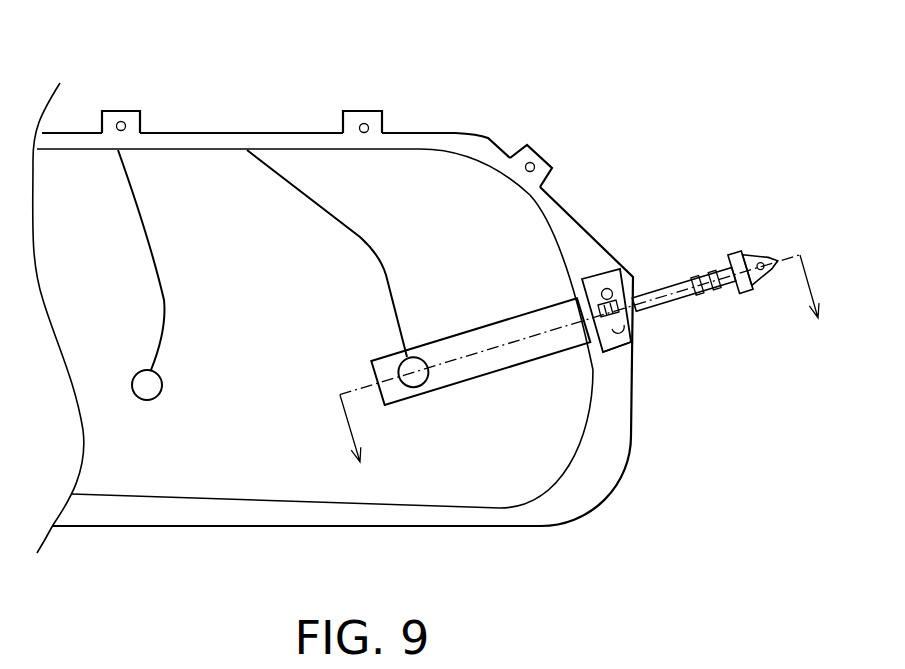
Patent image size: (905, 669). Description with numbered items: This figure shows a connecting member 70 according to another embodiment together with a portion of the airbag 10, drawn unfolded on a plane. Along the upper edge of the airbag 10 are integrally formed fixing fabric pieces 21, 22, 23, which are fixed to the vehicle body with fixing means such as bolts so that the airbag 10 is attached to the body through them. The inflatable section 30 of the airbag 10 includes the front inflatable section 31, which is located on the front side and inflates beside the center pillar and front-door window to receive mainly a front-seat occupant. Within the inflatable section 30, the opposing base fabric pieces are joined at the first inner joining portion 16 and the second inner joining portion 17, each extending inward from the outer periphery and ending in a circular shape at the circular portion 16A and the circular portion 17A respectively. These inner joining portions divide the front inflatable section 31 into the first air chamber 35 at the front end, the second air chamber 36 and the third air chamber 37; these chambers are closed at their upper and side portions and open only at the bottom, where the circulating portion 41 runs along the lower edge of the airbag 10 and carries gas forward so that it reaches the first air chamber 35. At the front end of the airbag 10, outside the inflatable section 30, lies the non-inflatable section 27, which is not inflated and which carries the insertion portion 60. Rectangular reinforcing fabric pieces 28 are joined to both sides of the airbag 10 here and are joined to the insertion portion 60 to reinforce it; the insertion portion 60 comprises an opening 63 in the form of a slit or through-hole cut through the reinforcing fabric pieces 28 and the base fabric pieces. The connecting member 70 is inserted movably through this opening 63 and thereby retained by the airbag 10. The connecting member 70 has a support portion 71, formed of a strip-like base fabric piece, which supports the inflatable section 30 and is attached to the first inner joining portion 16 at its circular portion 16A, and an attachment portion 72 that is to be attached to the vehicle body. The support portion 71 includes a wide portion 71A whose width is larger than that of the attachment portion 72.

The airbag 10 is at (274, 108).
The first inner joining portion 16 is at (338, 230).
The circular portion 16A is at (400, 362).
The second inner joining portion 17 is at (138, 222).
The circular portion 17A is at (137, 373).
The fixing fabric piece 21 is at (537, 160).
The fixing fabric piece 22 is at (364, 118).
The fixing fabric piece 23 is at (121, 118).
The non-inflatable section 27 is at (634, 397).
The reinforcing fabric piece 28 is at (636, 312).
The inflatable section 30 is at (621, 453).
The front inflatable section 31 is at (185, 452).
The first air chamber 35 is at (423, 183).
The second air chamber 36 is at (213, 185).
The third air chamber 37 is at (77, 177).
The circulating portion 41 is at (283, 460).
The insertion portion 60 is at (590, 276).
The opening 63 is at (624, 350).
The connecting member 70 is at (492, 365).
The support portion 71 is at (520, 320).
The wide portion 71A is at (457, 333).
The attachment portion 72 is at (687, 283).